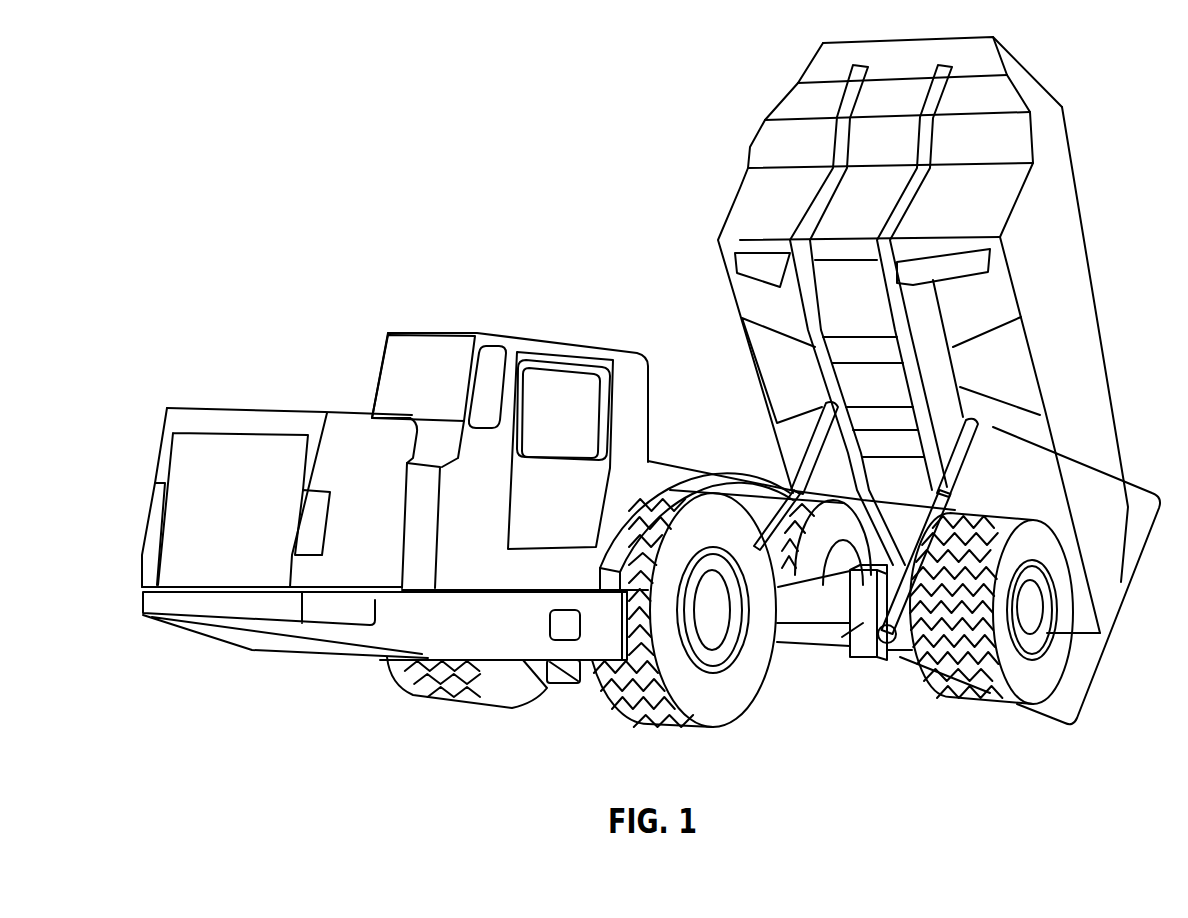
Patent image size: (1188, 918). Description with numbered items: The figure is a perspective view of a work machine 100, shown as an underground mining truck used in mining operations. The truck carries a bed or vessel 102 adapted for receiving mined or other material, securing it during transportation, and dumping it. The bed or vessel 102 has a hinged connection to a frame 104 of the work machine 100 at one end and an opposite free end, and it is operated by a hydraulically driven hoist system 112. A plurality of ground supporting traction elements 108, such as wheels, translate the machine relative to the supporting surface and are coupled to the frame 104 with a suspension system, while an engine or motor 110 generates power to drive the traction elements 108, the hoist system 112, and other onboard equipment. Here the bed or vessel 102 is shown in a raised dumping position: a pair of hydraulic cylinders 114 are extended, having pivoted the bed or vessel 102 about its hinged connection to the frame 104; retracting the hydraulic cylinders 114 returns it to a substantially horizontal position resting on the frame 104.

The work machine 100 is at (360, 230).
The bed or vessel 102 is at (1075, 343).
The frame 104 is at (842, 630).
The ground supporting traction elements 108 is at (707, 690).
The engine or motor 110 is at (358, 562).
The hydraulically driven hoist system 112 is at (1116, 618).
The hydraulic cylinders 114 is at (948, 472).